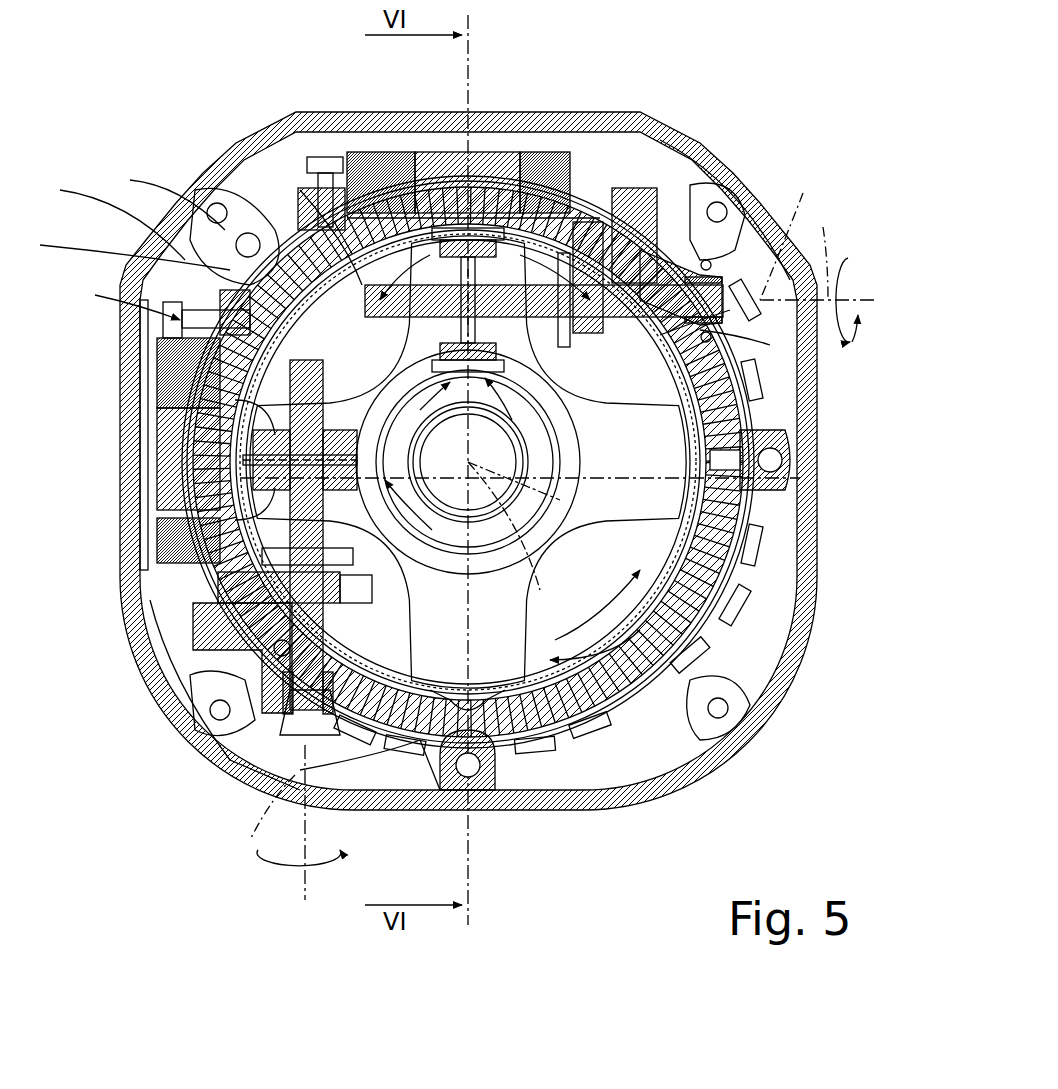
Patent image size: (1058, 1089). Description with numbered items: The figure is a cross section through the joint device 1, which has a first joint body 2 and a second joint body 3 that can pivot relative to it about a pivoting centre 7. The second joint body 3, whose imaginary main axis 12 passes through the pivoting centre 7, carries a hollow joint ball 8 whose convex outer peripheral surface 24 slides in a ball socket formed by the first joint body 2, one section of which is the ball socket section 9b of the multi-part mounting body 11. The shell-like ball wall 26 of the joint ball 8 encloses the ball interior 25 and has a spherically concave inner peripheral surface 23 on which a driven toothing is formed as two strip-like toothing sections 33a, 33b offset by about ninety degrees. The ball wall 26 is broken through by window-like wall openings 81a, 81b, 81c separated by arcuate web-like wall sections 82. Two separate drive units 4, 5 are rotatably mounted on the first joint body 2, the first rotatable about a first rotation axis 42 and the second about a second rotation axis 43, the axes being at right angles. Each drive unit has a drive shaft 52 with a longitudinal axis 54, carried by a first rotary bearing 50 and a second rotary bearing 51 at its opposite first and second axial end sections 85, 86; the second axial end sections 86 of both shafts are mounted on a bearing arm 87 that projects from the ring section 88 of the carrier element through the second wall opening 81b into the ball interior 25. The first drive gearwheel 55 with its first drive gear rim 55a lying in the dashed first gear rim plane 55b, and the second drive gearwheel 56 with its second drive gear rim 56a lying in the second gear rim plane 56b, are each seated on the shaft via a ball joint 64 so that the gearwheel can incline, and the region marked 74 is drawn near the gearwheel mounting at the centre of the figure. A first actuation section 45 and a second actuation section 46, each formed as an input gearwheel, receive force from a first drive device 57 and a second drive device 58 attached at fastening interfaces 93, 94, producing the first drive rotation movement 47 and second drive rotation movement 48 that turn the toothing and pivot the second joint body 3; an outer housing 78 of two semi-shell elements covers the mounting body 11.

The joint device 1 is at (705, 110).
The first joint body 2 is at (193, 745).
The second joint body 3 is at (718, 418).
The first drive unit 4 is at (260, 620).
The second drive unit 5 is at (645, 255).
The pivoting centre 7 is at (520, 700).
The joint ball 8 is at (428, 760).
The ball socket section 9b is at (730, 610).
The mounting body 11 is at (640, 740).
The main axis 12 is at (790, 470).
The inner peripheral surface 23 is at (590, 222).
The outer peripheral surface 24 is at (720, 492).
The ball interior 25 is at (770, 660).
The ball wall 26 is at (595, 700).
The first toothing section 33a is at (210, 480).
The second toothing section 33b is at (395, 205).
The first rotation axis 42 is at (320, 843).
The second rotation axis 43 is at (820, 250).
The first actuation section 45 is at (225, 598).
The second actuation section 46 is at (628, 140).
The first drive rotation movement 47 is at (285, 860).
The second drive rotation movement 48 is at (855, 285).
The first rotary bearing 50 is at (725, 215).
The second rotary bearing 51 is at (325, 160).
The drive shaft 52 is at (632, 190).
The longitudinal axis 54 is at (524, 515).
The first drive gearwheel 55 is at (375, 462).
The first drive gear rim 55a is at (416, 509).
The first gear rim plane 55b is at (250, 455).
The second drive gearwheel 56 is at (514, 407).
The second drive gear rim 56a is at (420, 404).
The second gear rim plane 56b is at (472, 240).
The first drive device 57 is at (150, 330).
The second drive device 58 is at (564, 250).
The ball joint 64 is at (695, 392).
The central bore 74 is at (468, 470).
The outer housing 78 is at (750, 742).
The first wall opening 81a is at (390, 700).
The second wall opening 81b is at (262, 220).
The third wall opening 81c is at (740, 365).
The wall section 82 is at (448, 290).
The first axial end section 85 is at (235, 772).
The second axial end section 86 is at (275, 200).
The bearing arm 87 is at (190, 300).
The ring section 88 is at (732, 575).
The fastening interface 93 is at (110, 291).
The fastening interface 94 is at (380, 270).